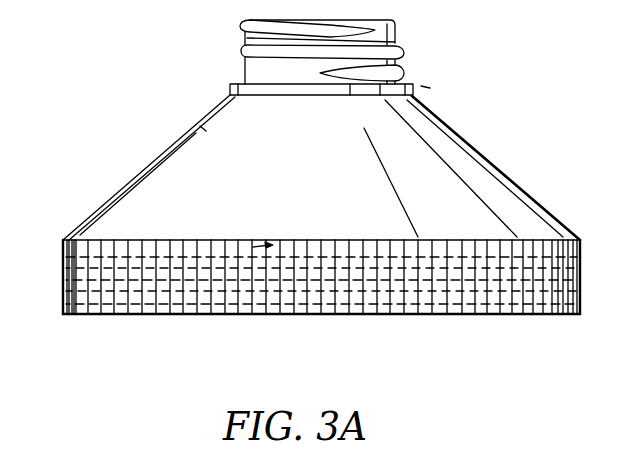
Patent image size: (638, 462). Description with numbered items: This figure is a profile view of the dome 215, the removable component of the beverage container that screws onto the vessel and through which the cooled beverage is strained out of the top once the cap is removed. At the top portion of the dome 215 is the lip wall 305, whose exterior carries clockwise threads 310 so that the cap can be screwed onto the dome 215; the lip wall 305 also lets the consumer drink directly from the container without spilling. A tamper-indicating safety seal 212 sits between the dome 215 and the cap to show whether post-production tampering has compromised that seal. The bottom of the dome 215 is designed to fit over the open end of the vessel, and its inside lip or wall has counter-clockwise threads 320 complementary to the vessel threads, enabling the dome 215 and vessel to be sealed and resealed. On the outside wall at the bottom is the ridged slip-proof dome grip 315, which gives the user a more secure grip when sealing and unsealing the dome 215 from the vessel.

The dome 215 is at (120, 83).
The tamper-indicating safety seal 212 is at (230, 91).
The lip wall 305 is at (326, 51).
The clockwise threads 310 is at (242, 52).
The ridged slip-proof dome grip 315 is at (312, 248).
The counter-clockwise threads 320 is at (311, 292).